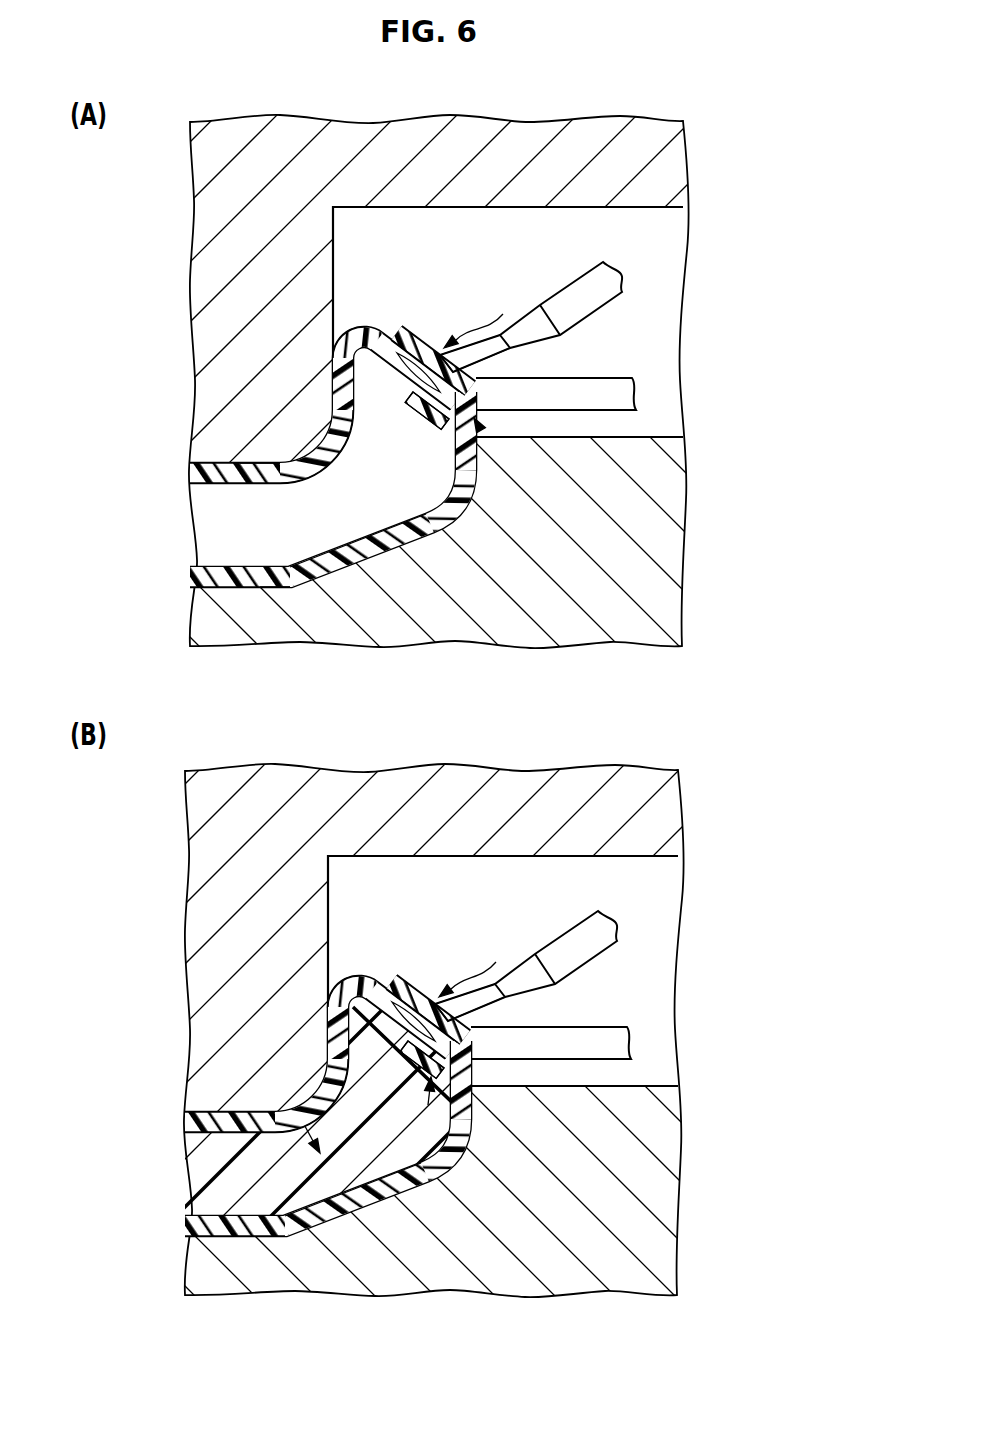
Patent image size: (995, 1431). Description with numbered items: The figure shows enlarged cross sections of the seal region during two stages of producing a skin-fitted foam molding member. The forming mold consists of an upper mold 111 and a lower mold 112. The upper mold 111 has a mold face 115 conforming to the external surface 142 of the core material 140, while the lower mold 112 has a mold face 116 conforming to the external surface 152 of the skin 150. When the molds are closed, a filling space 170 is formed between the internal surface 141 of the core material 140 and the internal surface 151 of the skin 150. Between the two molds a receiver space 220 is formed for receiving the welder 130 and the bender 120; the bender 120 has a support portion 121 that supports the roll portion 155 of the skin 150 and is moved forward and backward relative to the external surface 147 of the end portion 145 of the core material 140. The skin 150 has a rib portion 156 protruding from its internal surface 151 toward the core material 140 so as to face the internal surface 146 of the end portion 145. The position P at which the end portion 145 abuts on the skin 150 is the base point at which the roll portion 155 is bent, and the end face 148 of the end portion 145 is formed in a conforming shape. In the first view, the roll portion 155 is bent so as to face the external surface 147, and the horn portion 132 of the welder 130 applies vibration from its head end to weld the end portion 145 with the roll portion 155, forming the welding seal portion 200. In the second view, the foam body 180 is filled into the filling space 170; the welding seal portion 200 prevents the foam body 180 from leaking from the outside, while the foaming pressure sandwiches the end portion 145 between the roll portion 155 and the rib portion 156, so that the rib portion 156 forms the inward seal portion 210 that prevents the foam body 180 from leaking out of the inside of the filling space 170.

The upper mold 111 is at (213, 450).
The lower mold 112 is at (200, 610).
The mold face 115 is at (235, 462).
The mold face 116 is at (207, 633).
The bender 120 is at (644, 392).
The support portion 121 is at (608, 400).
The welder 130 is at (642, 273).
The horn portion 132 is at (628, 357).
The core material 140 is at (190, 477).
The internal surface 141 is at (330, 445).
The external surface 142 is at (276, 461).
The end portion 145 is at (395, 335).
The internal surface 146 is at (396, 372).
The external surface 147 is at (416, 331).
The end face 148 is at (517, 397).
The skin 150 is at (190, 580).
The internal surface 151 is at (397, 500).
The external surface 152 is at (292, 590).
The roll portion 155 is at (428, 333).
The rib portion 156 is at (433, 430).
The filling space 170 is at (213, 530).
The foam body 180 is at (230, 1140).
The welding seal portion 200 is at (480, 639).
The inward seal portion 210 is at (470, 1100).
The receiver space 220 is at (596, 238).
The position P is at (474, 418).